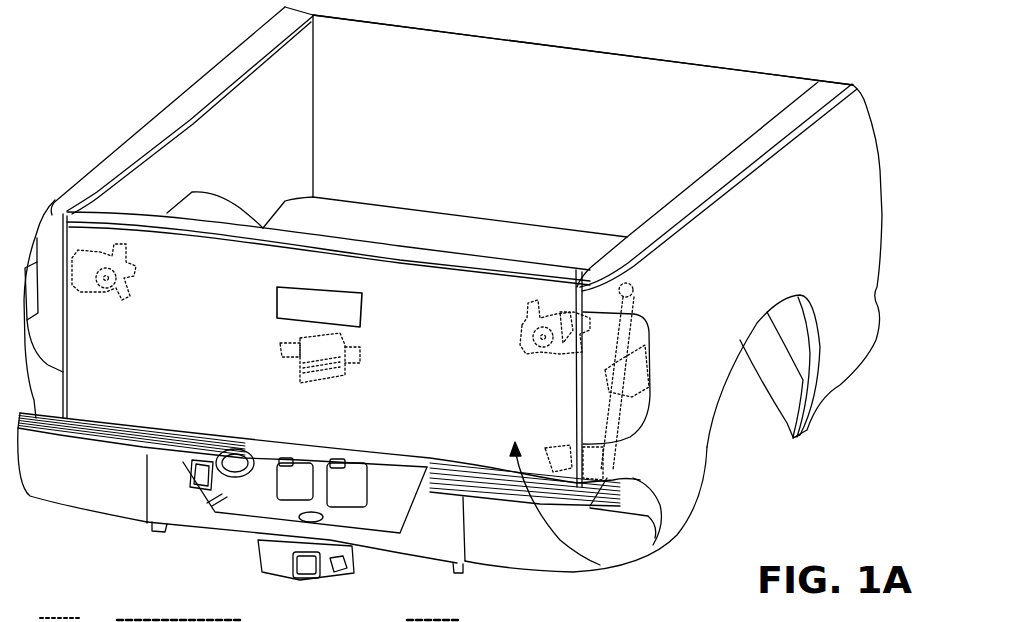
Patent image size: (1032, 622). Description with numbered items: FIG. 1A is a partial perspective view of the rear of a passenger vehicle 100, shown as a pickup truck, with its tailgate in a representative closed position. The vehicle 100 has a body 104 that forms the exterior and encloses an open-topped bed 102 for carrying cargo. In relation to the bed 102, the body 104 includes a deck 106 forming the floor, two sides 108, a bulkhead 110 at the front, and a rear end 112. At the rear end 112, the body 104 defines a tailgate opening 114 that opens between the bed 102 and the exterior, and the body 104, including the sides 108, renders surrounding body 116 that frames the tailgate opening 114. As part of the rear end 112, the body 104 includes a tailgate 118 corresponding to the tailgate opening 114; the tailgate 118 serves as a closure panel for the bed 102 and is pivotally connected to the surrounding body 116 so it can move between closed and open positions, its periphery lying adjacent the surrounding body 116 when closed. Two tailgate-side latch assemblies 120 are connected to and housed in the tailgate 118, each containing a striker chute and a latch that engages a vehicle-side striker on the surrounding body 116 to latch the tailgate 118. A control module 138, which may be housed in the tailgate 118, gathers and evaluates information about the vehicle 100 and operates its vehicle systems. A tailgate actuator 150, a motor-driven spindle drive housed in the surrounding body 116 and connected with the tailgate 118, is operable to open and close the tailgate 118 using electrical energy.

The vehicle 100 is at (862, 88).
The bed 102 is at (858, 158).
The body 104 is at (873, 111).
The deck 106 is at (343, 213).
The sides 108 is at (306, 162).
The bulkhead 110 is at (500, 38).
The rear end 112 is at (462, 445).
The tailgate opening 114 is at (540, 433).
The surrounding body 116 is at (607, 478).
The tailgate 118 is at (607, 477).
The tailgate-side latch assembly 120 is at (137, 271).
The control module 138 is at (352, 344).
The tailgate actuator 150 is at (605, 415).